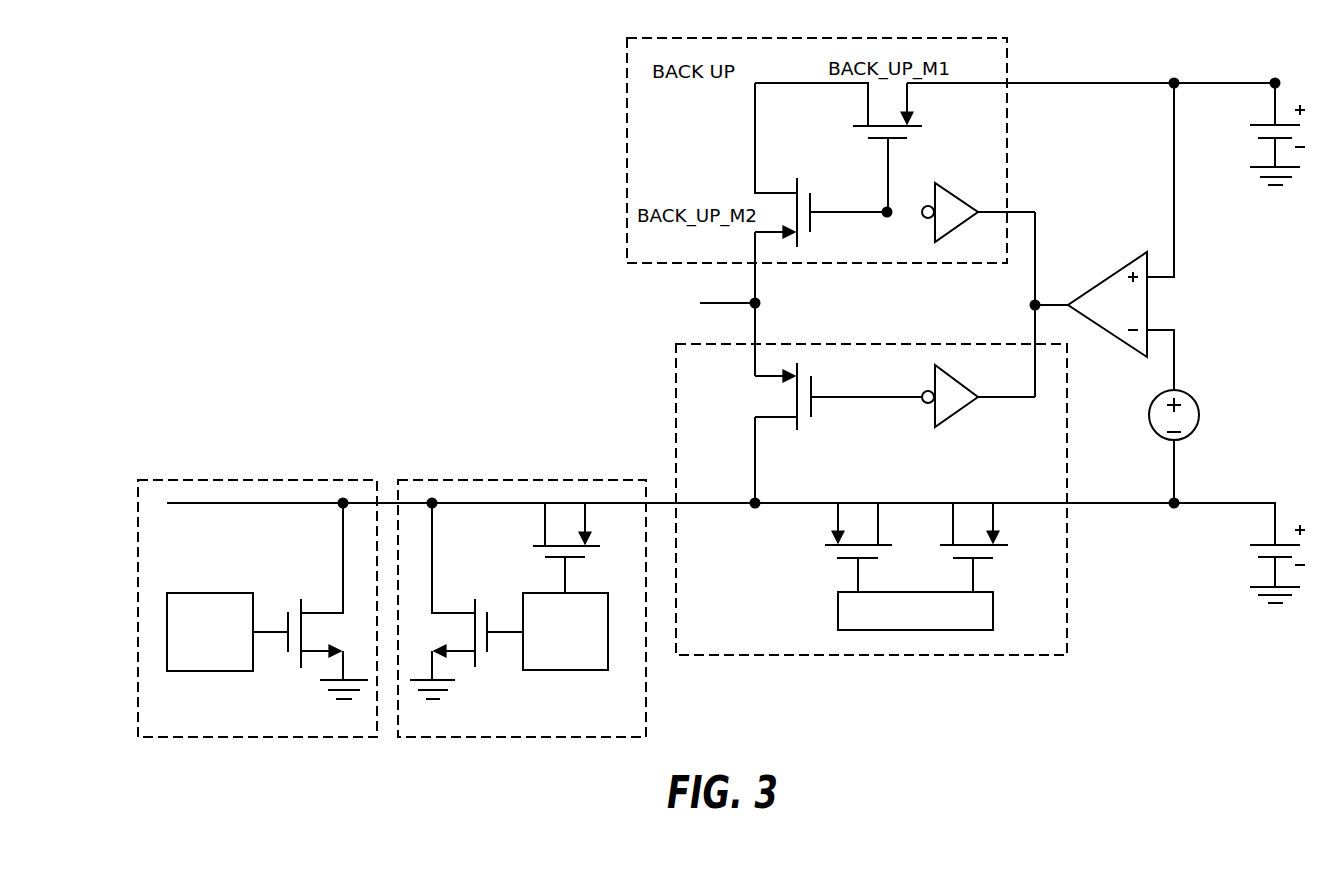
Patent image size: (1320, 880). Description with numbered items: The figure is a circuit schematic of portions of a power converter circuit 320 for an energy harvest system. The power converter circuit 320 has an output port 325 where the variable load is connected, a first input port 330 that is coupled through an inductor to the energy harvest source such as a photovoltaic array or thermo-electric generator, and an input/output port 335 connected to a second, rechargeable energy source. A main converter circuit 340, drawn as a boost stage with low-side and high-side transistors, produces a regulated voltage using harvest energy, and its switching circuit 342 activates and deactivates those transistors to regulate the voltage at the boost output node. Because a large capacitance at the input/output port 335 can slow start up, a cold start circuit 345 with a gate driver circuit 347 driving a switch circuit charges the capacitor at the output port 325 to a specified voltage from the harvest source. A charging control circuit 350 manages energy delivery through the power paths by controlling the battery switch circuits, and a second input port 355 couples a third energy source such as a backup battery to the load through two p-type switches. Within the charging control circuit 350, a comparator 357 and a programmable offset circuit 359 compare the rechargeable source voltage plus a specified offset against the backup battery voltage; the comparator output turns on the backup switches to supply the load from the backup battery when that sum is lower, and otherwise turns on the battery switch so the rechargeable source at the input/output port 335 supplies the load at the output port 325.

The power converter circuit 320 is at (266, 89).
The output port 325 is at (760, 302).
The first input port 330 is at (343, 499).
The input/output port 335 is at (1176, 505).
The main converter circuit 340 is at (522, 592).
The switching circuit 342 is at (565, 670).
The cold start circuit 345 is at (257, 592).
The gate driver circuit 347 is at (208, 593).
The charging control circuit 350 is at (852, 344).
The second input port 355 is at (1172, 81).
The comparator 357 is at (1107, 277).
The programmable offset circuit 359 is at (1200, 415).